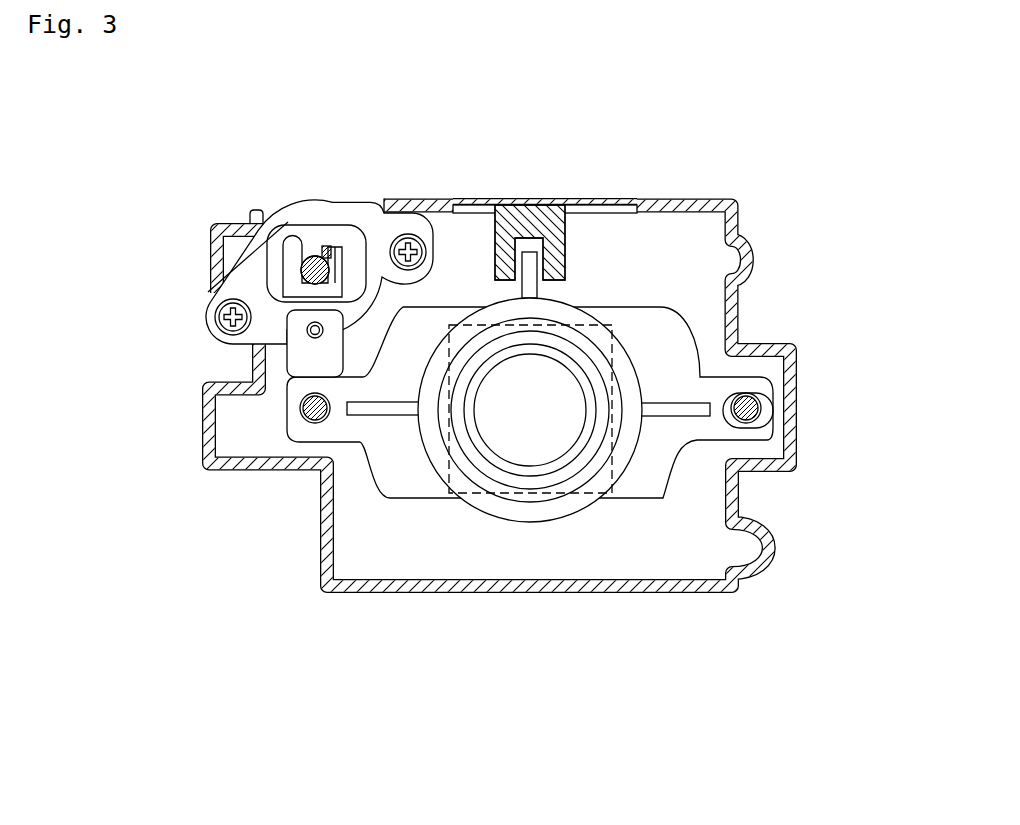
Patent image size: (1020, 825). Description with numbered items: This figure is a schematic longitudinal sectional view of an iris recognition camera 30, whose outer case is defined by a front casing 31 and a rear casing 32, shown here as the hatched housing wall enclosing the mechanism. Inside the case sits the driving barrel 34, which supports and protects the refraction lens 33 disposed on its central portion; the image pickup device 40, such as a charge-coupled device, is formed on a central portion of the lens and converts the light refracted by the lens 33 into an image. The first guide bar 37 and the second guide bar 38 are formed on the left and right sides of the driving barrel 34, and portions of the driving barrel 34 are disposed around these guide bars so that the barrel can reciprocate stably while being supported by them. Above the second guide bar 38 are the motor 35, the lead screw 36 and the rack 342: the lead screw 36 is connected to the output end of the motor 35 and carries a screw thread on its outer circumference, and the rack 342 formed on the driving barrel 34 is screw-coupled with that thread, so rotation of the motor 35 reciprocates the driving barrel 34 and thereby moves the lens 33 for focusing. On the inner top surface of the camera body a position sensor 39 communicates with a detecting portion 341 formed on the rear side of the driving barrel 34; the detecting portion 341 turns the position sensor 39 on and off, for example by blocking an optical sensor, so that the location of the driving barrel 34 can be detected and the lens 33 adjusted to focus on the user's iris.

The iris recognition camera 30 is at (493, 412).
The front casing 31 is at (352, 594).
The rear casing 32 is at (536, 453).
The refraction lens 33 is at (518, 443).
The driving barrel 34 is at (677, 323).
The motor 35 is at (277, 207).
The lead screw 36 is at (305, 263).
The first guide bar 37 is at (761, 408).
The second guide bar 38 is at (300, 410).
The position sensor 39 is at (552, 207).
The image pickup device 40 is at (583, 493).
The detecting portion 341 is at (533, 205).
The rack 342 is at (303, 255).